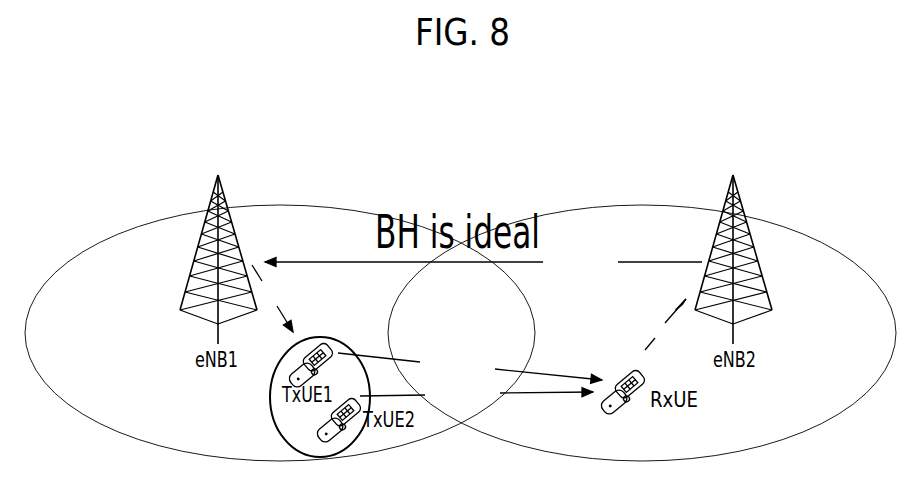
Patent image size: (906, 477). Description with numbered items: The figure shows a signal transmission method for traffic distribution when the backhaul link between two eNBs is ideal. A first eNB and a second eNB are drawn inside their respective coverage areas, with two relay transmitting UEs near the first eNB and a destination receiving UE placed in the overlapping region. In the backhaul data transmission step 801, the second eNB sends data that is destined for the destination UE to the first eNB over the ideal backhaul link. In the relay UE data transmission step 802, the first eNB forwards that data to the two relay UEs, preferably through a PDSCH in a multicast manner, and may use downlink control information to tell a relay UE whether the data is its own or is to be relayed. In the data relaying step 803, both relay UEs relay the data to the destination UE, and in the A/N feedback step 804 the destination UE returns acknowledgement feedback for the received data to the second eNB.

The backhaul data transmission step 801 is at (483, 262).
The relay UE data transmission step 802 is at (287, 298).
The data relaying step 803 is at (470, 375).
The A/N feedback step 804 is at (644, 324).